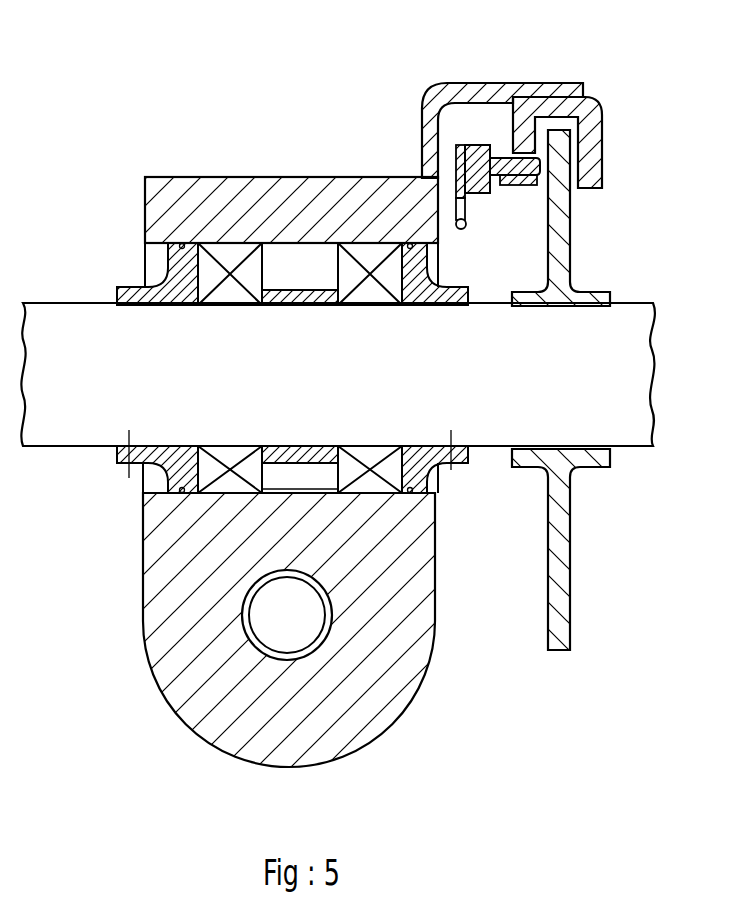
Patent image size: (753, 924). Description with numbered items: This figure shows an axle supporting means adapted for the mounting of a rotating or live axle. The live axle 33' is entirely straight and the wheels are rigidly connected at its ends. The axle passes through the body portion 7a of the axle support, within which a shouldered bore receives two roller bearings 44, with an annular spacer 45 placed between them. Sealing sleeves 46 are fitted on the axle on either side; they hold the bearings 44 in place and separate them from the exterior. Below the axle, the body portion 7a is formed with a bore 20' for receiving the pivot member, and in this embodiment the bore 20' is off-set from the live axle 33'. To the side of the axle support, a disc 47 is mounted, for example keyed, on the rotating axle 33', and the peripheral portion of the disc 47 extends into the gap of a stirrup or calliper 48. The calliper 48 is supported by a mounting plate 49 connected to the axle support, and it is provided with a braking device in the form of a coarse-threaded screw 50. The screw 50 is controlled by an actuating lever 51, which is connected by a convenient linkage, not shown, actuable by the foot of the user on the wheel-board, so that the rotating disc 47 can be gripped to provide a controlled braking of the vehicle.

The body portion 7a is at (160, 198).
The roller bearings 44 is at (230, 255).
The annular spacer 45 is at (300, 275).
The sealing sleeves 46 is at (120, 285).
The disc 47 is at (568, 240).
The stirrup or calliper 48 is at (592, 130).
The mounting plate 49 is at (460, 92).
The coarse-threaded screw 50 is at (500, 150).
The actuating lever 51 is at (467, 224).
The live axle 33' is at (338, 403).
The bore 20' is at (289, 643).